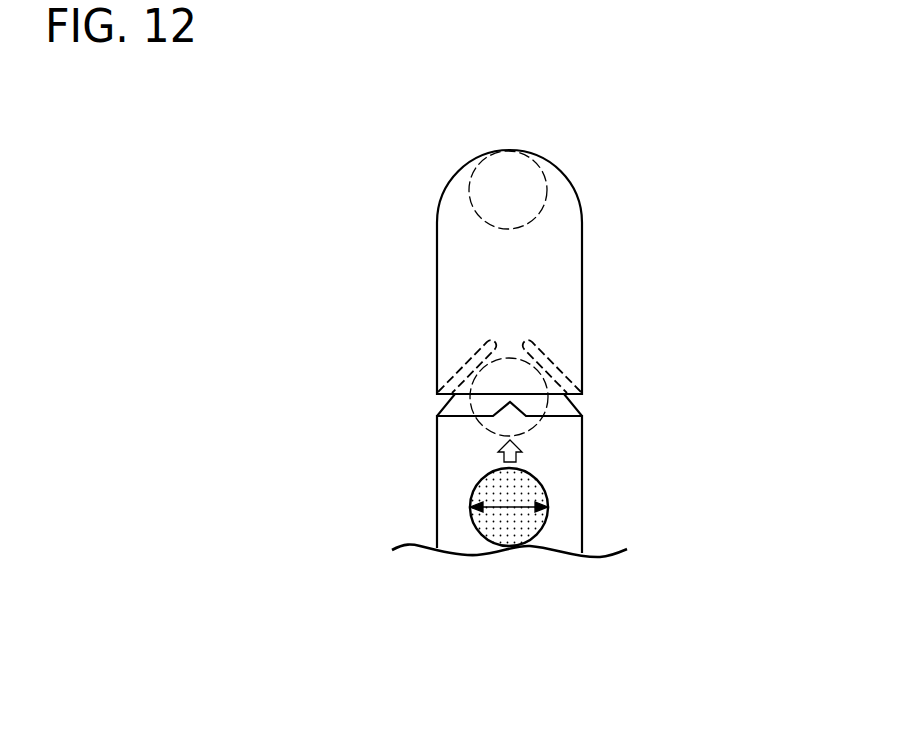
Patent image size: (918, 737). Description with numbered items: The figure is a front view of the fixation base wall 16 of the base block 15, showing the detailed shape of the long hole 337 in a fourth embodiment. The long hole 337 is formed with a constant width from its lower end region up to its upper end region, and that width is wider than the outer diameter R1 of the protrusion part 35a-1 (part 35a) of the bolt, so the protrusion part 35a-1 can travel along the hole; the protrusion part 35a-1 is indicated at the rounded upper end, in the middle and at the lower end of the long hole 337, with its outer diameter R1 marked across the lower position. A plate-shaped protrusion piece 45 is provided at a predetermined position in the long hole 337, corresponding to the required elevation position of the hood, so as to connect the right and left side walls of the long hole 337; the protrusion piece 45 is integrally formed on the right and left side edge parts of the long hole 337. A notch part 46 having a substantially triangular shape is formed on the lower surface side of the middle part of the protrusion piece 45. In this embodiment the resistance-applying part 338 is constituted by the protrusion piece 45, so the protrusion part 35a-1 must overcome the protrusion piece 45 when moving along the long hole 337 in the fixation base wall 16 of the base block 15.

The fixation base wall 16 is at (472, 251).
The base block 15 is at (411, 200).
The protrusion part 35a-1 is at (629, 348).
The rod portion 35a is at (546, 190).
The protrusion piece 45 is at (488, 396).
The resistance-applying part 338 is at (467, 364).
The notch part 46 is at (505, 435).
The long hole 337 is at (441, 502).
The outer diameter R1 is at (512, 510).